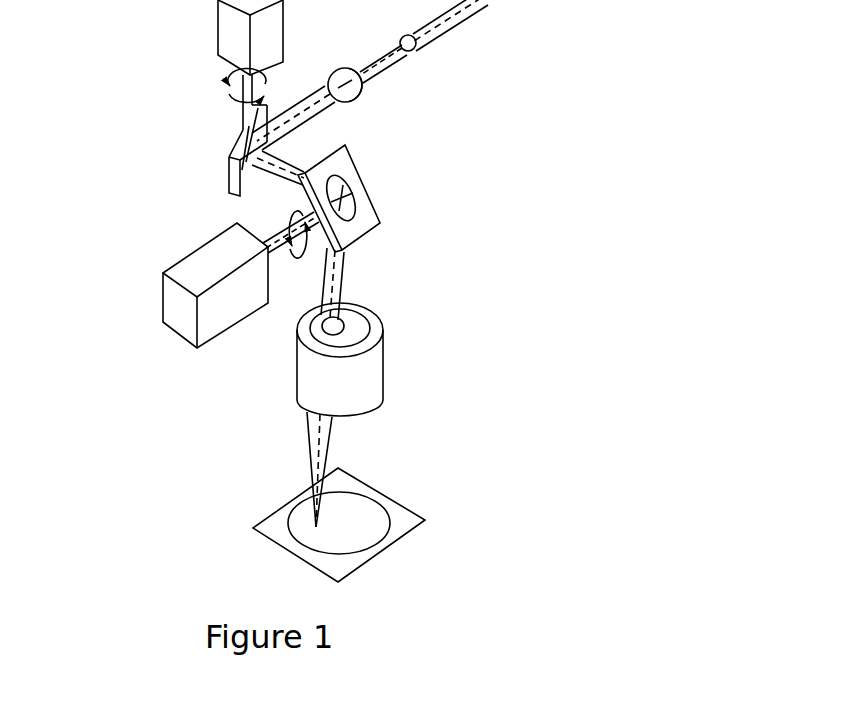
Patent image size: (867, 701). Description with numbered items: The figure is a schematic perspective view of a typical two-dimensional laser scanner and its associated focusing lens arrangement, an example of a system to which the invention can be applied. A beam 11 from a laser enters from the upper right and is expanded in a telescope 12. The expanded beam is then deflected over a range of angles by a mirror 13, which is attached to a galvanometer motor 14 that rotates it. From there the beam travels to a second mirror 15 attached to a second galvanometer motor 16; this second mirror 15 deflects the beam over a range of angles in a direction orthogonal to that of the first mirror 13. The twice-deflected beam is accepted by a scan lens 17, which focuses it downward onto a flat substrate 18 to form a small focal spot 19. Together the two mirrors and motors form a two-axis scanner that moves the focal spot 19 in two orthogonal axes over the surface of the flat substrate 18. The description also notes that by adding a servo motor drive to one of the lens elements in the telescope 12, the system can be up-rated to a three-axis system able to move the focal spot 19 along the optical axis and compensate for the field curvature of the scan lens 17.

The beam 11 is at (462, 32).
The telescope 12 is at (376, 93).
The mirror 13 is at (226, 148).
The galvanometer motor 14 is at (227, 27).
The second mirror 15 is at (367, 226).
The second galvanometer motor 16 is at (166, 315).
The scan lens 17 is at (302, 377).
The flat substrate 18 is at (373, 480).
The focal spot 19 is at (308, 525).